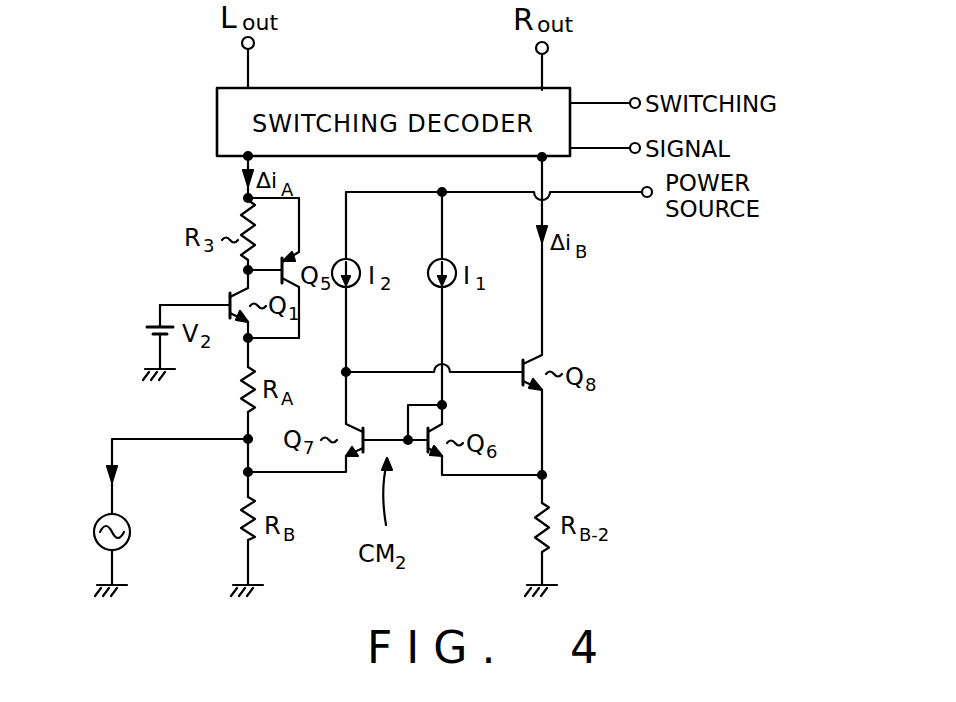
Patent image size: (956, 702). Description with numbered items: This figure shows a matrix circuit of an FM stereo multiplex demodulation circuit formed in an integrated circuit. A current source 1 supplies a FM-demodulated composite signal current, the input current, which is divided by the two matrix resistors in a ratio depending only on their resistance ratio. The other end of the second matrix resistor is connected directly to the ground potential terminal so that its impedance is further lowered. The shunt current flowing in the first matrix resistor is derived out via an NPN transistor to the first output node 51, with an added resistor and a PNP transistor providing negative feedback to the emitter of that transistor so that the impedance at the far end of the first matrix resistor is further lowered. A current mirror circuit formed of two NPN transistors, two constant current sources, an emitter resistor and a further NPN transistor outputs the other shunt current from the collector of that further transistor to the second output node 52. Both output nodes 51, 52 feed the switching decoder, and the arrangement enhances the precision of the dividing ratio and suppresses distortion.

The first output node 51 is at (244, 158).
The second output node 52 is at (545, 159).
The current source 1 is at (126, 546).